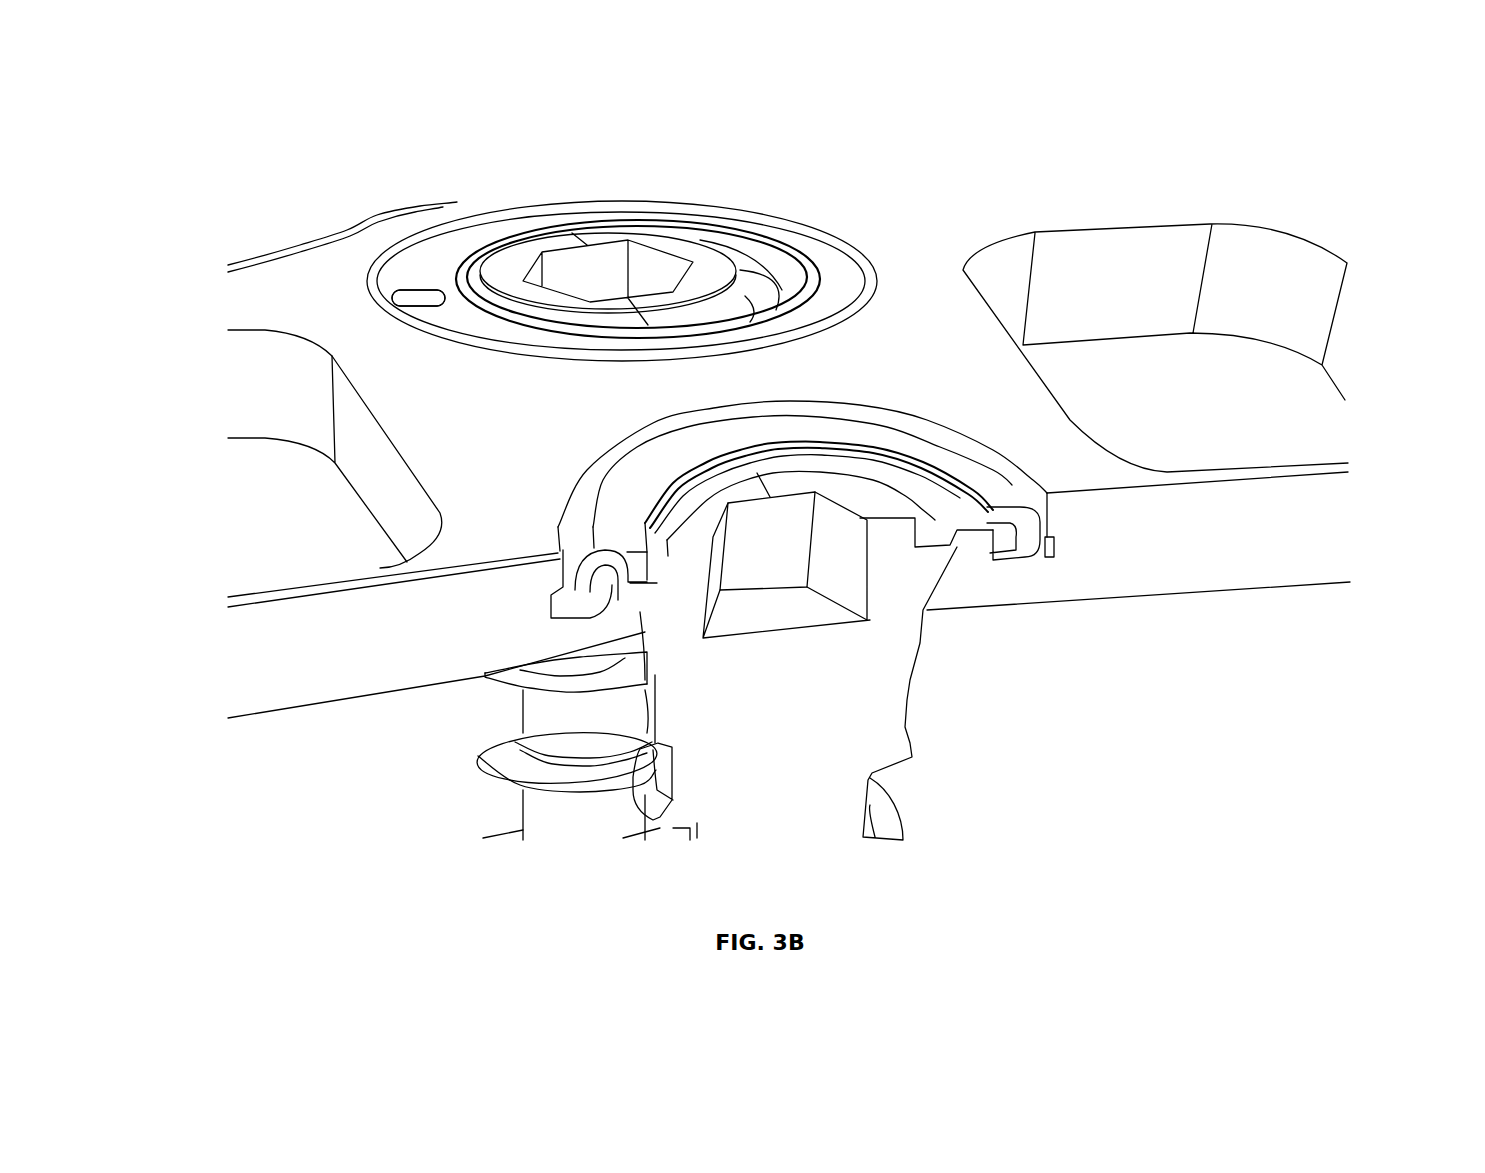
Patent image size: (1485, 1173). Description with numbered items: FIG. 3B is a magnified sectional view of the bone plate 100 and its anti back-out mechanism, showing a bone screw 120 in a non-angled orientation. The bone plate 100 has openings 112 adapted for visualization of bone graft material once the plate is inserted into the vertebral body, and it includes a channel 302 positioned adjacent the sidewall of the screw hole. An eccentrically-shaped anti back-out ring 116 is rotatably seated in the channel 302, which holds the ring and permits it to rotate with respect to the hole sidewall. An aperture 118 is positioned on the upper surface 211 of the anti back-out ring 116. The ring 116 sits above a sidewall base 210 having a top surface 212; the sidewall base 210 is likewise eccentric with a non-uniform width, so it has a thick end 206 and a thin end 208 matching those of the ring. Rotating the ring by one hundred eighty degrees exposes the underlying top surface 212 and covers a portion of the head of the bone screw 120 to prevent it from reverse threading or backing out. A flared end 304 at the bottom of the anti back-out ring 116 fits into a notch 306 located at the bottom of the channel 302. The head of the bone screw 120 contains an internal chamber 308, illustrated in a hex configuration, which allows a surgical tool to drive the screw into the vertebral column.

The bone plate 100 is at (258, 125).
The openings 112 is at (272, 508).
The anti back-out ring 116 is at (475, 230).
The aperture 118 is at (404, 300).
The bone screw 120 is at (680, 245).
The thick end 206 is at (975, 538).
The thin end 208 is at (522, 672).
The sidewall base 210 is at (970, 560).
The upper surface 211 is at (412, 277).
The top surface 212 is at (765, 250).
The channel 302 is at (813, 208).
The flared end 304 is at (1045, 553).
The notch 306 is at (1053, 553).
The internal chamber 308 is at (593, 258).